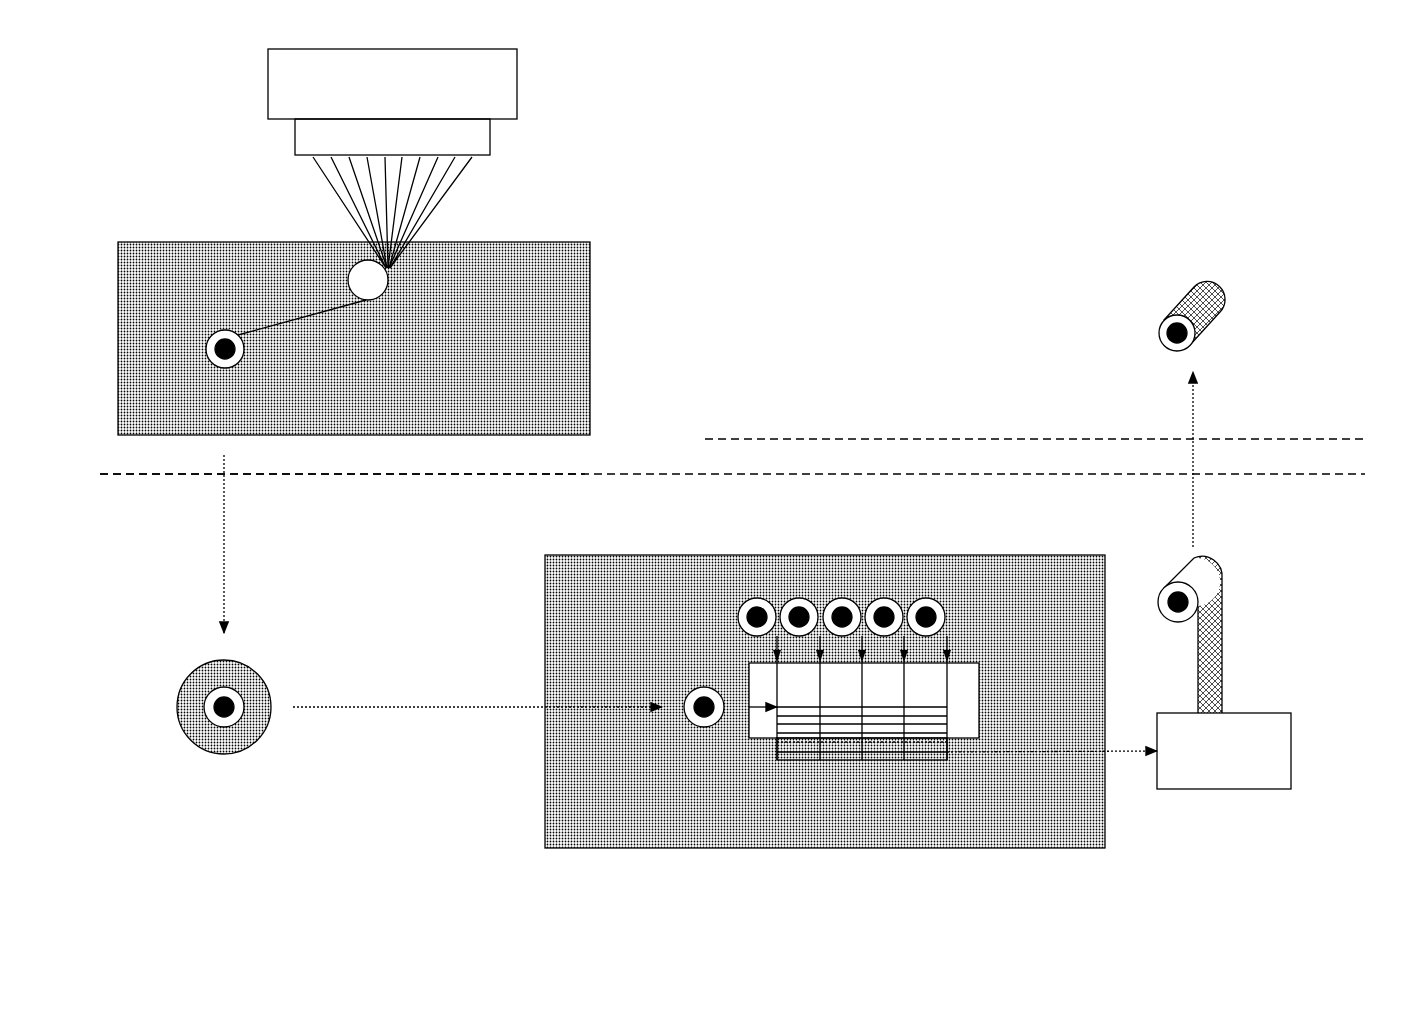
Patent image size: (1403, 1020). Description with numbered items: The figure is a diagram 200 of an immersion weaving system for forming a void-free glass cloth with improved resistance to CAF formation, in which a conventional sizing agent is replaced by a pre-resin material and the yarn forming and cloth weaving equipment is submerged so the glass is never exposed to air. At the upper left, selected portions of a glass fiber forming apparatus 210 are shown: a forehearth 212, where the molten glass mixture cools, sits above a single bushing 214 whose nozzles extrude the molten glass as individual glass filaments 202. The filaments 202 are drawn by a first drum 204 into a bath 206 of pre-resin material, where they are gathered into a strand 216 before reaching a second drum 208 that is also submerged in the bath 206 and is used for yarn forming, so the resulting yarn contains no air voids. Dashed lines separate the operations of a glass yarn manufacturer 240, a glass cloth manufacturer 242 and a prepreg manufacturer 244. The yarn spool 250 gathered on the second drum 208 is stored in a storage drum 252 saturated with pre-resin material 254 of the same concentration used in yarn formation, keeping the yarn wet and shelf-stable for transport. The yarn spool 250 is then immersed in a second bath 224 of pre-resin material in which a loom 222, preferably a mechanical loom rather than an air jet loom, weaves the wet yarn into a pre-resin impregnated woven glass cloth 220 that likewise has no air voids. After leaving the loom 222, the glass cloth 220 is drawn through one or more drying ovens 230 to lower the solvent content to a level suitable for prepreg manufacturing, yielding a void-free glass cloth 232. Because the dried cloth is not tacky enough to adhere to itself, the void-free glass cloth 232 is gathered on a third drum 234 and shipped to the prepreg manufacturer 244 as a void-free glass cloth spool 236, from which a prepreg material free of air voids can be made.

The diagram 200 is at (1187, 77).
The glass filaments 202 is at (467, 199).
The first drum 204 is at (396, 298).
The bath of pre-resin material 206 is at (320, 267).
The second drum 208 is at (238, 378).
The glass fiber forming apparatus 210 is at (555, 82).
The forehearth 212 is at (457, 95).
The bushing 214 is at (446, 149).
The strand 216 is at (316, 331).
The glass cloth 220 is at (972, 800).
The loom 222 is at (976, 661).
The bath of pre-resin material 224 is at (782, 585).
The drying ovens 230 is at (1277, 778).
The void-free glass cloth 232 is at (1230, 636).
The third drum 234 is at (1158, 572).
The void-free glass cloth spool 236 is at (1150, 317).
The glass yarn manufacturer 240 is at (732, 460).
The glass cloth manufacturer 242 is at (342, 489).
The prepreg manufacturer 244 is at (1035, 425).
The yarn spool 250 is at (206, 722).
The storage drum 252 is at (343, 682).
The pre-resin material 254 is at (266, 705).